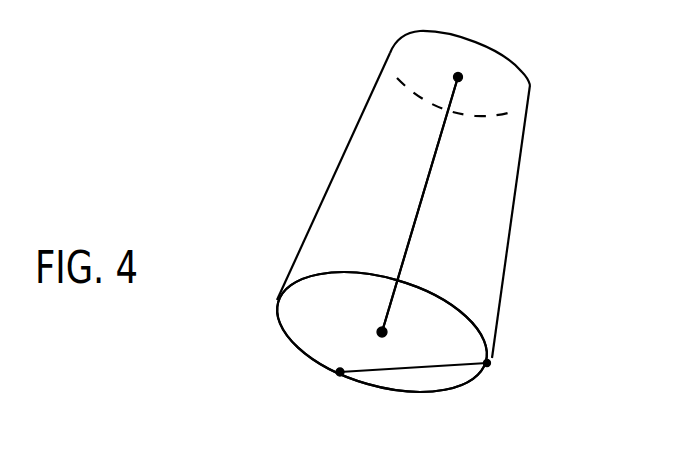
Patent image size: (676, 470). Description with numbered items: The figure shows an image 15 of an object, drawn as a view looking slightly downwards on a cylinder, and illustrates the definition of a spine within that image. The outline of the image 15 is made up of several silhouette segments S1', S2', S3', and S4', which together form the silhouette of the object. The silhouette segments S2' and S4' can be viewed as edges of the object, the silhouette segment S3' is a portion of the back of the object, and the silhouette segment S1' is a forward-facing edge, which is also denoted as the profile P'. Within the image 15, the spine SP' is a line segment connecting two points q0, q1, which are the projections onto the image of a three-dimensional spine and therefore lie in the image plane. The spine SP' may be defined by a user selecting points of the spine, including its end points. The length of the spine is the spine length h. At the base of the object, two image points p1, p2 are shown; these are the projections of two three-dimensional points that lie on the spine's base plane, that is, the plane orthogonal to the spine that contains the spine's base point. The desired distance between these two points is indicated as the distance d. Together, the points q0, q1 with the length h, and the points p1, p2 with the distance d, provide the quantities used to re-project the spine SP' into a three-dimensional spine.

The image 15 is at (300, 40).
The silhouette segment S1' is at (333, 176).
The silhouette segment S2' is at (460, 67).
The silhouette segment S3' is at (533, 221).
The silhouette segment S4' is at (378, 331).
The spine SP' is at (432, 204).
The profile P' is at (381, 346).
The spine length h is at (420, 204).
The desired distance d is at (413, 348).
The point q0 is at (358, 321).
The point q1 is at (481, 73).
The image point p1 is at (321, 405).
The image point p2 is at (507, 401).